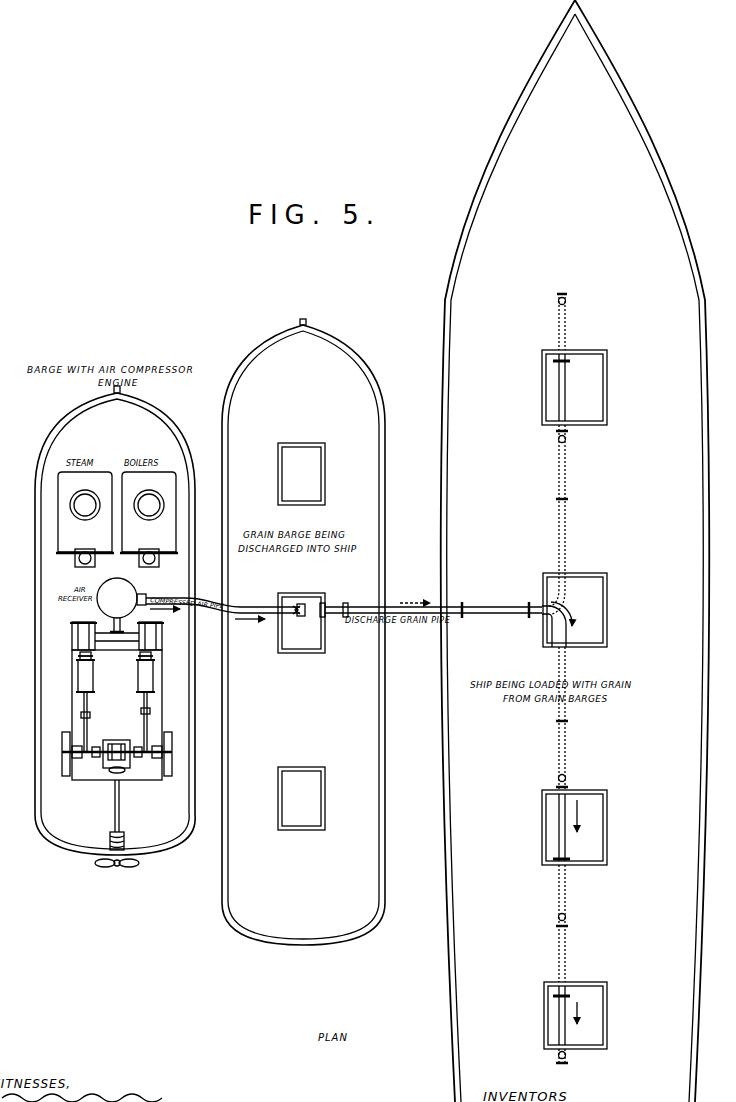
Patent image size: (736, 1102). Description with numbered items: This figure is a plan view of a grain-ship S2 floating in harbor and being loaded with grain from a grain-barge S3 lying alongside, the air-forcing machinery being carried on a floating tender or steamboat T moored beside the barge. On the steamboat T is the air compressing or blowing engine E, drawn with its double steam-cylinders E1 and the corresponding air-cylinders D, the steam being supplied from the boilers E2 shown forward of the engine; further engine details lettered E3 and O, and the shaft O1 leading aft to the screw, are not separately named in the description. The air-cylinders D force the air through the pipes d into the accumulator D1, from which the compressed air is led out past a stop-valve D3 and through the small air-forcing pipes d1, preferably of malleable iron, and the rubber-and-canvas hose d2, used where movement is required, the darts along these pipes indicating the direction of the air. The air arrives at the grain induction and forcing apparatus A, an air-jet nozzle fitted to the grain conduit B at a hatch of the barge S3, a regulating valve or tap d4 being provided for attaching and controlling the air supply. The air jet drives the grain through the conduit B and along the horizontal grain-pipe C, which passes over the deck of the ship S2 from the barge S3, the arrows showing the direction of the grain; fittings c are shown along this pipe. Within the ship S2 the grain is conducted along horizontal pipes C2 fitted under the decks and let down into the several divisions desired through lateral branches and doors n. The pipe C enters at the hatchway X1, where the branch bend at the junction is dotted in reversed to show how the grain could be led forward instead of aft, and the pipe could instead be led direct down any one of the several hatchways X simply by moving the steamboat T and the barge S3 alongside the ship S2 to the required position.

The steamboat T is at (115, 620).
The steam boilers E2 is at (117, 519).
The accumulator D1 is at (117, 598).
The stop-valve D3 is at (144, 590).
The air-cylinders D is at (117, 629).
The pipes d is at (117, 636).
The air compressing or blowing engine E is at (117, 715).
The steam-cylinders E1 is at (115, 702).
The crank shaft E3 is at (117, 754).
The shaft bearing O is at (116, 752).
The propeller shaft O1 is at (117, 823).
The air-forcing pipes d1 is at (223, 605).
The hose d2 is at (236, 614).
The regulating valves or taps d4 is at (296, 616).
The grain induction and forcing apparatus A is at (305, 605).
The grain-transmitting conduit B is at (442, 610).
The grain-barge S3 is at (303, 632).
The horizontal grain-pipe C is at (451, 700).
The pipe valves c is at (518, 678).
The ship S2 is at (575, 551).
The hatchways X is at (574, 699).
The hatchway X1 is at (575, 610).
The horizontal pipes C2 is at (570, 679).
The lateral branches and doors n is at (569, 677).